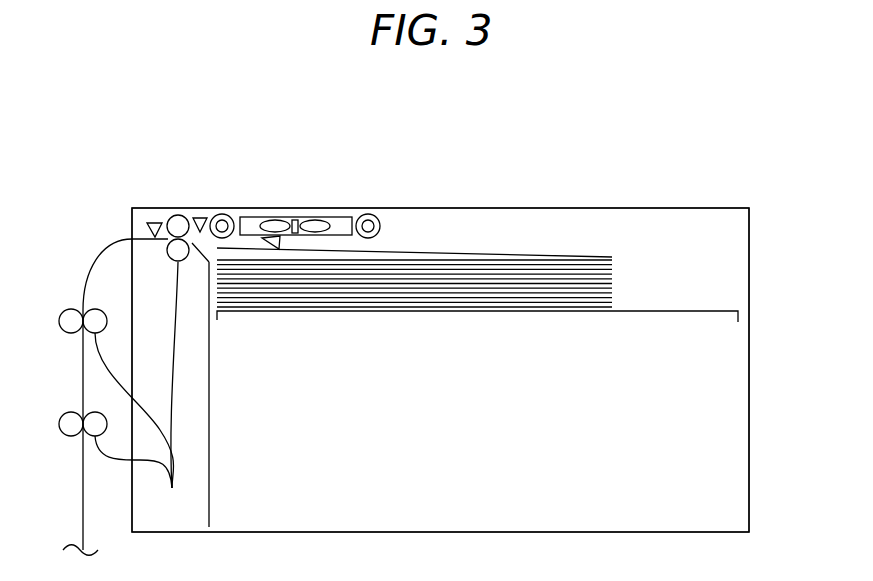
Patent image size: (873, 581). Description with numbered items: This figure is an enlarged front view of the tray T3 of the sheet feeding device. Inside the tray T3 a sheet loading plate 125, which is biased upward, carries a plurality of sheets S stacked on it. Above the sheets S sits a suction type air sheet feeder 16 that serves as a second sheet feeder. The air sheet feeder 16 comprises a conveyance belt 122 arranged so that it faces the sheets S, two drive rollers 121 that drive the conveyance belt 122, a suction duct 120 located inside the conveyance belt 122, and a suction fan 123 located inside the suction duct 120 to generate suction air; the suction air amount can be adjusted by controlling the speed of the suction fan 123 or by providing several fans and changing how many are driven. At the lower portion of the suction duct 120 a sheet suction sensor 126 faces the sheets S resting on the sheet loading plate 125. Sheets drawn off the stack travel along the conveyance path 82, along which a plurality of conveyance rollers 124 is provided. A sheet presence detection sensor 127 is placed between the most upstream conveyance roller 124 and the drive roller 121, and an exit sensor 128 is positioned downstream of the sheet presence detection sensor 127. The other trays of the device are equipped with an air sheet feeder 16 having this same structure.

The air sheet feeder 16 is at (452, 155).
The conveyance path 82 is at (100, 257).
The exit sensor 128 is at (155, 224).
The sheet presence detection sensor 127 is at (200, 218).
The drive roller 121 is at (222, 214).
The suction duct 120 is at (342, 223).
The conveyance belt 122 is at (250, 217).
The suction fan 123 is at (315, 220).
The sheet suction sensor 126 is at (277, 237).
The sheet S is at (575, 258).
The tray T3 is at (737, 260).
The sheet loading plate 125 is at (670, 312).
The conveyance roller 124 is at (140, 391).